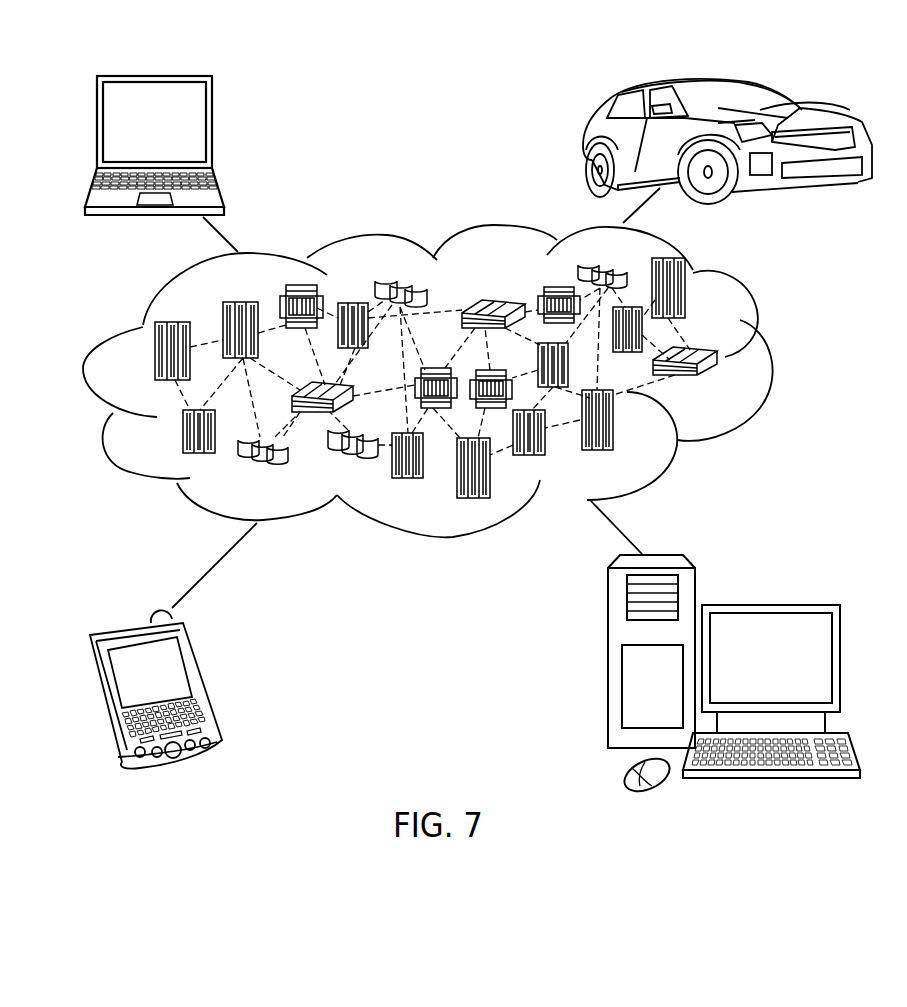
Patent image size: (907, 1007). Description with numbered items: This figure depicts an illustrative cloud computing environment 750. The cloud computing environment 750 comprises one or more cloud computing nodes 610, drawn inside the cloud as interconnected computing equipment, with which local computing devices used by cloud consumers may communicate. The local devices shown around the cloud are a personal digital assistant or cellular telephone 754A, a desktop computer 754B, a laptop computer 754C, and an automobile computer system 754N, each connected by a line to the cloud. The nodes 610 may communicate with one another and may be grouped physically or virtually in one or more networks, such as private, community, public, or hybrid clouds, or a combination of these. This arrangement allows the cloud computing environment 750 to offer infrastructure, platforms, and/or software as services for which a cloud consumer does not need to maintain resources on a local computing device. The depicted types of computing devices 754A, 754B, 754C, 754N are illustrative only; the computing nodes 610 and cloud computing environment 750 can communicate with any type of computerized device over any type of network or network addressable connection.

The cloud computing environment 750 is at (772, 362).
The cloud computing nodes 610 is at (712, 395).
The personal digital assistant (PDA) or cellular telephone 754A is at (203, 682).
The desktop computer 754B is at (768, 604).
The laptop computer 754C is at (212, 127).
The automobile computer system 754N is at (583, 143).